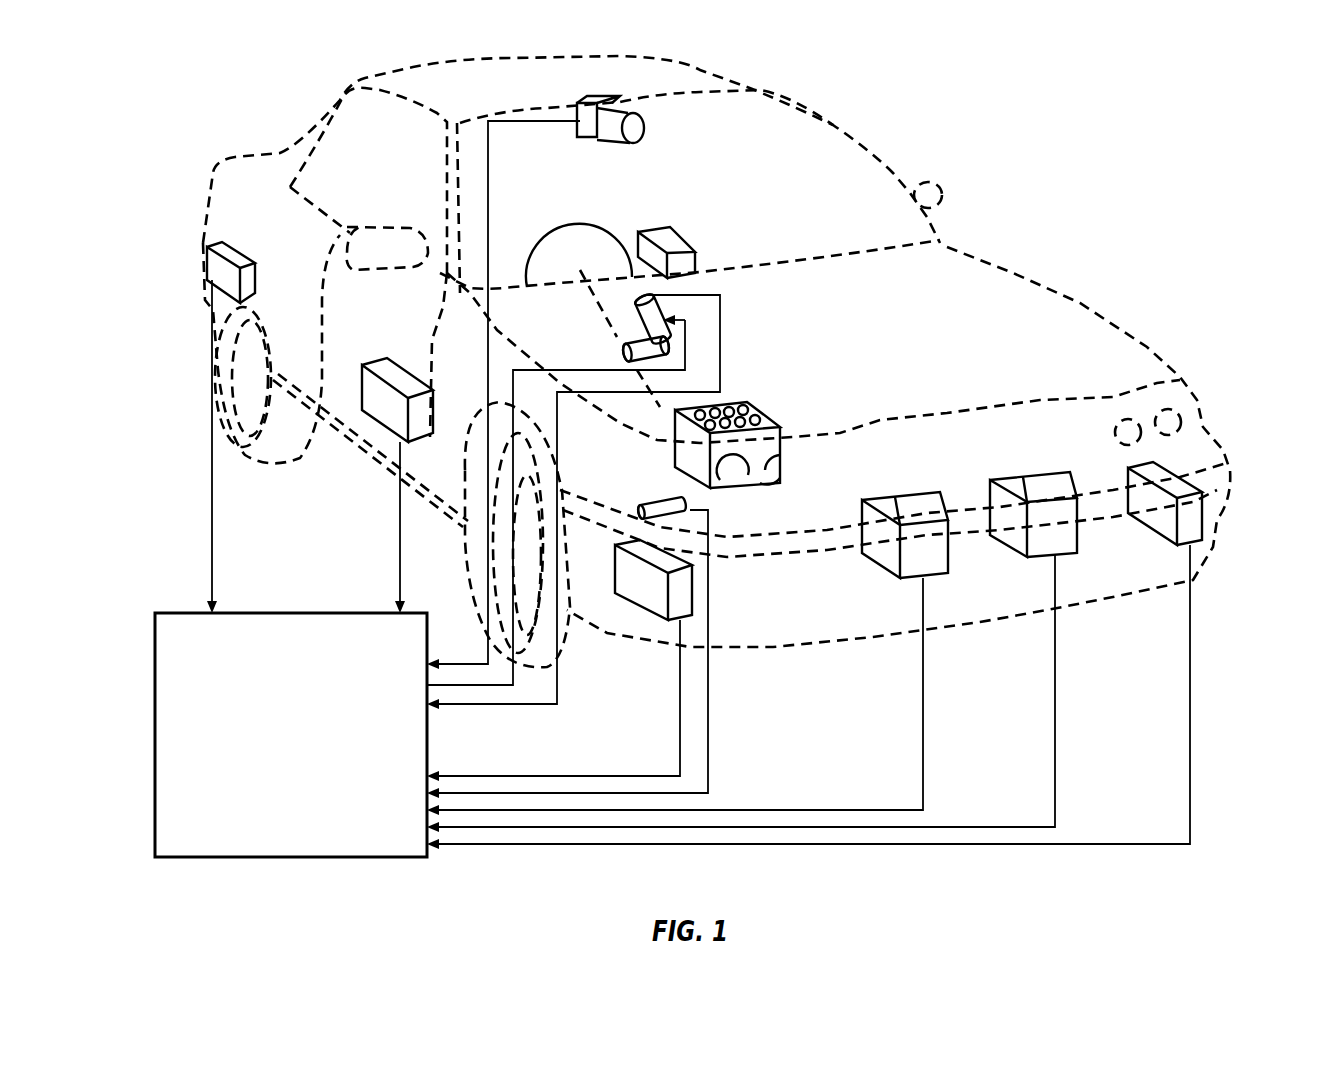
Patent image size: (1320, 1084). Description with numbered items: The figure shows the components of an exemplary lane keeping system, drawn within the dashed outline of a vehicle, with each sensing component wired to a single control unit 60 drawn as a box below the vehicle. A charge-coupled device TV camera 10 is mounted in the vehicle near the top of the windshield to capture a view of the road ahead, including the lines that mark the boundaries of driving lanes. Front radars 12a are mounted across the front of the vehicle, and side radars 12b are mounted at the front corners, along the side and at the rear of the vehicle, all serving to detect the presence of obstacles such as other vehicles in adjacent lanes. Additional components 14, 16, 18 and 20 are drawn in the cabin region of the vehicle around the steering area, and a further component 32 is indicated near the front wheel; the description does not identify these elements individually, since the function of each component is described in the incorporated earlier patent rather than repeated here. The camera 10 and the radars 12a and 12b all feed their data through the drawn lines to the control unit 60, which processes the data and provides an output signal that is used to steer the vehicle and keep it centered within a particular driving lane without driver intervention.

The CCD TV camera 10 is at (643, 132).
The front radar 12a is at (1043, 555).
The side radar 12b is at (204, 277).
The sensor 14 is at (670, 242).
The sensor 16 is at (660, 500).
The steering wheel 18 is at (563, 222).
The steering column sensor 20 is at (588, 297).
The wheel 32 is at (570, 650).
The control unit 60 is at (278, 795).